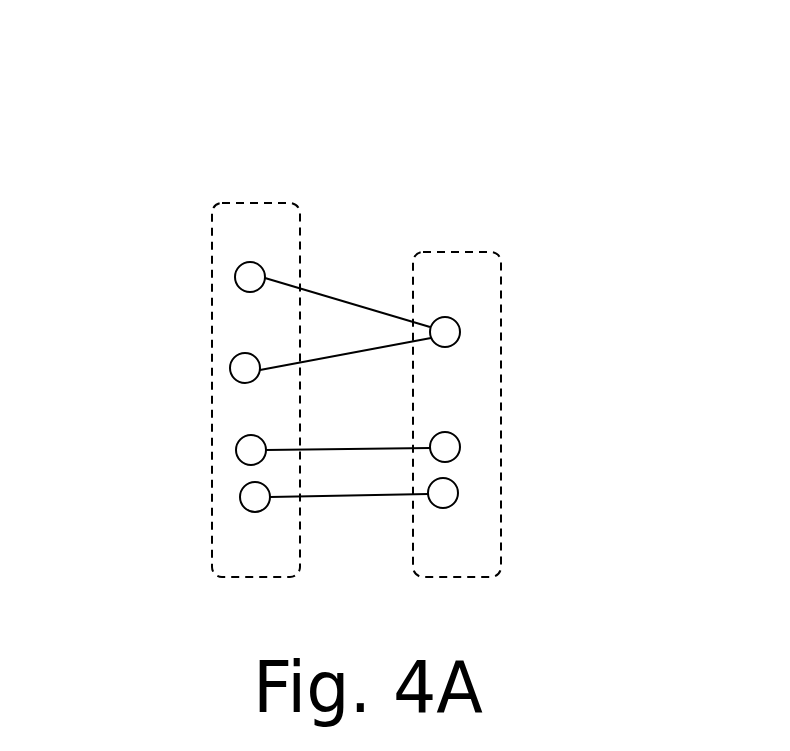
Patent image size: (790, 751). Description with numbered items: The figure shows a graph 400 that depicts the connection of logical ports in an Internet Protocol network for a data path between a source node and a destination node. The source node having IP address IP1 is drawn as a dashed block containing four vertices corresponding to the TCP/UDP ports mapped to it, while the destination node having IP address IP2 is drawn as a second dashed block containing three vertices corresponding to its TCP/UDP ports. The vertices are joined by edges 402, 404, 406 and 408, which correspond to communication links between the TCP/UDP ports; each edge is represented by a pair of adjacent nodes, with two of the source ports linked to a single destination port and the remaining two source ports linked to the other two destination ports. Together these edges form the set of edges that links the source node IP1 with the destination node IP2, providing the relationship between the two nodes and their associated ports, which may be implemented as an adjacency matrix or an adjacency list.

The graph 400 is at (252, 78).
The edge 402 is at (335, 295).
The edge 404 is at (365, 352).
The edge 406 is at (358, 448).
The edge 408 is at (360, 498).
The IP address of source node IP1 is at (212, 548).
The IP address of destination node IP2 is at (501, 548).